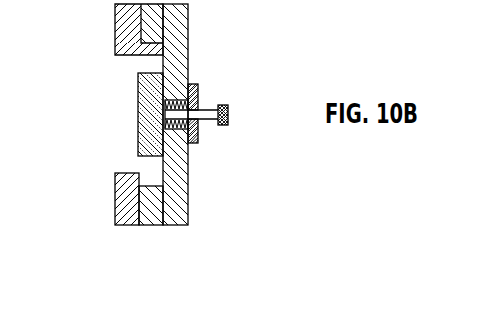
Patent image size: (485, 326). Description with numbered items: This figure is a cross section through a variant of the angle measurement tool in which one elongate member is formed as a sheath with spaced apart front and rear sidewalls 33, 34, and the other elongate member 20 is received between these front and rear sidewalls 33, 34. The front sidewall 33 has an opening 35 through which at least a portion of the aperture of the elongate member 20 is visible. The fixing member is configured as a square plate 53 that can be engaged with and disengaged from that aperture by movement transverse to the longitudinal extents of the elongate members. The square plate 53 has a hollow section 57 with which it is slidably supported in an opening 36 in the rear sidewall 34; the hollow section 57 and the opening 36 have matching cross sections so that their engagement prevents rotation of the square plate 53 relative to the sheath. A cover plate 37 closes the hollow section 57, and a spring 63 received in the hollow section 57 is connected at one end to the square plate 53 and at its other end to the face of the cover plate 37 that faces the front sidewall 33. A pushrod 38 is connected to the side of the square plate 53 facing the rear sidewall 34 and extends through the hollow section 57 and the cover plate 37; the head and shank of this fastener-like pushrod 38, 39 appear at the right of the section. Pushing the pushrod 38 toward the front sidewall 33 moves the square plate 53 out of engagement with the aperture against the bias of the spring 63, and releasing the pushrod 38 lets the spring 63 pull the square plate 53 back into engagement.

The elongate member 20 is at (163, 226).
The front sidewall 33 is at (114, 218).
The rear sidewall 34 is at (189, 217).
The opening 35 is at (116, 62).
The opening 36 is at (190, 148).
The cover plate 37 is at (198, 132).
The pushrod 38 is at (226, 110).
The bolt shank 39 is at (228, 117).
The square plate 53 is at (138, 95).
The hollow section 57 is at (189, 81).
The spring 63 is at (198, 98).